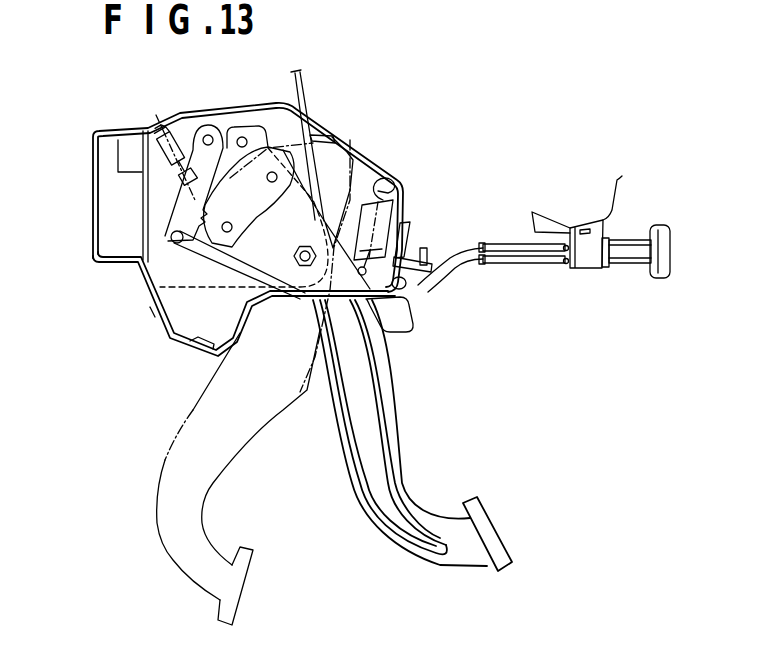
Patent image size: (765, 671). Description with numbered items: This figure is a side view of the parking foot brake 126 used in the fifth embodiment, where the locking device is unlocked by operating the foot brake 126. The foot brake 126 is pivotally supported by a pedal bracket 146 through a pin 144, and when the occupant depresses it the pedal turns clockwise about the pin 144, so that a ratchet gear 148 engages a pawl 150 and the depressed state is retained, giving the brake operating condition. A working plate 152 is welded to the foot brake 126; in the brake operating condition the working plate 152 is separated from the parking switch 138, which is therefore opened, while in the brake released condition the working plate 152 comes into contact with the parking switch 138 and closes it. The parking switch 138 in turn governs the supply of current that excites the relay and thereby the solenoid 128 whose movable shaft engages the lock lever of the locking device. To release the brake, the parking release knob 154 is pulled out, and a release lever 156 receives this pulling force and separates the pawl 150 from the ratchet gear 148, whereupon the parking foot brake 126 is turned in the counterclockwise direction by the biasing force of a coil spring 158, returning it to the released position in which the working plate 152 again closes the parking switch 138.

The parking foot brake 126 is at (277, 413).
The solenoid 128 is at (516, 0).
The parking switch 138 is at (425, 247).
The pin 144 is at (293, 257).
The pedal bracket 146 is at (385, 164).
The ratchet gear 148 is at (164, 273).
The pawl 150 is at (259, 128).
The working plate 152 is at (410, 297).
The parking release knob 154 is at (619, 264).
The release lever 156 is at (184, 197).
The coil spring 158 is at (411, 202).